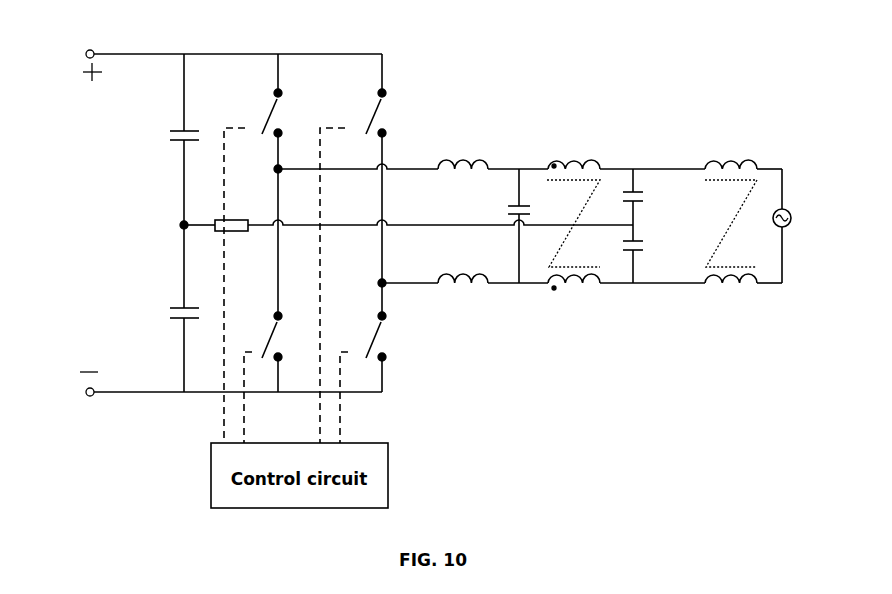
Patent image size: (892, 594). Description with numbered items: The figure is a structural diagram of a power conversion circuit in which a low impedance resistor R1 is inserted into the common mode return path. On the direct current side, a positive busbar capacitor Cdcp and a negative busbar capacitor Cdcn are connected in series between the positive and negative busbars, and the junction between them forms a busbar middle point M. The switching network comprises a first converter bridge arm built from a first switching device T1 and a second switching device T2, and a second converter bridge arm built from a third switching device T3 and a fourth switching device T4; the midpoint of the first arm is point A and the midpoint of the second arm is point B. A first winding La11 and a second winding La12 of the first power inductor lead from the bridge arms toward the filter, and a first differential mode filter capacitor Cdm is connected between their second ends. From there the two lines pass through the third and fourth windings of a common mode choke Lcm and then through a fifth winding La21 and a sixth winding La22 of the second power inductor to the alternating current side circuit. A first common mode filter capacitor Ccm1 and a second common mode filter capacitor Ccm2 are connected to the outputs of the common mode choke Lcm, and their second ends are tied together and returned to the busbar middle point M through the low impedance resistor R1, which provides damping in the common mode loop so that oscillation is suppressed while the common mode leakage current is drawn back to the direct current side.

The positive busbar capacitor Cdcp is at (153, 139).
The negative busbar capacitor Cdcn is at (153, 316).
The busbar middle point M is at (169, 226).
The low impedance resistor R1 is at (221, 214).
The first switching device T1 is at (259, 110).
The second switching device T2 is at (260, 331).
The third switching device T3 is at (363, 110).
The fourth switching device T4 is at (363, 331).
The point A of the switching network A is at (266, 174).
The second bridge arm midpoint B is at (370, 271).
The first winding La11 is at (463, 152).
The second winding La12 is at (463, 297).
The common mode choke Lcm is at (573, 227).
The first differential mode filter capacitor Cdm is at (540, 226).
The first common mode filter capacitor Ccm1 is at (665, 197).
The second common mode filter capacitor Ccm2 is at (665, 254).
The fifth winding La21 is at (731, 201).
The sixth winding La22 is at (731, 297).